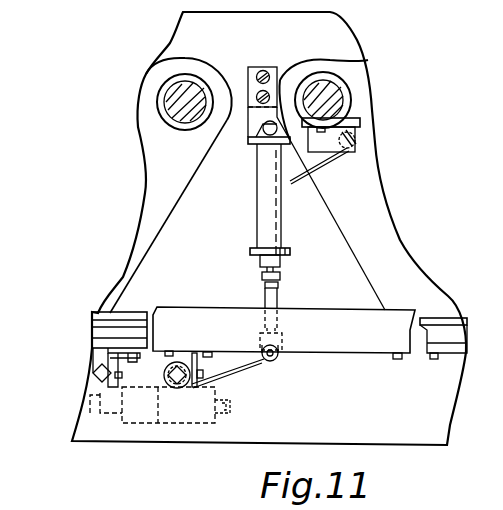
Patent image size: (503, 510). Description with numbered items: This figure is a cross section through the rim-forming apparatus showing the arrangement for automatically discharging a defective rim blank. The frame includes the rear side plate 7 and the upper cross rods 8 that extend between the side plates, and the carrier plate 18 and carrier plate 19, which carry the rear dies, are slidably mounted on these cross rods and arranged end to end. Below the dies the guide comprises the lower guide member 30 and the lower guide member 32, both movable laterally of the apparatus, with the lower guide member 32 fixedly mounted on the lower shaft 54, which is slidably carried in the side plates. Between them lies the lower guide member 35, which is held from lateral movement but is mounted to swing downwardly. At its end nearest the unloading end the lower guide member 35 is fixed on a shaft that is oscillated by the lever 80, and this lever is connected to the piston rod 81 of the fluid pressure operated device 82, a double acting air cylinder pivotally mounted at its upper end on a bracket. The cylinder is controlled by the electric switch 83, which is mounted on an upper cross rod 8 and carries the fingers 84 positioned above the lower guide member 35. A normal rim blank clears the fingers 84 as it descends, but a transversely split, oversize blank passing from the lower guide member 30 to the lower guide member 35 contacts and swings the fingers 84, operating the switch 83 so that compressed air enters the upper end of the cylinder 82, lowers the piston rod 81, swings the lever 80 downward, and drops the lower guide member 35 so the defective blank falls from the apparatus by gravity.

The rear side plate 7 is at (347, 40).
The upper cross rods 8 is at (185, 97).
The reciprocable carrier plate 18 is at (158, 218).
The carrier plate 19 is at (168, 375).
The lower guide member 30 is at (453, 350).
The lower guide member 32 is at (135, 317).
The lower guide member 35 is at (362, 347).
The lower shaft 54 is at (93, 372).
The lever 80 is at (250, 363).
The piston rod 81 is at (262, 273).
The fluid pressure operated device 82 is at (265, 205).
The electric switch 83 is at (360, 123).
The fingers 84 is at (322, 163).